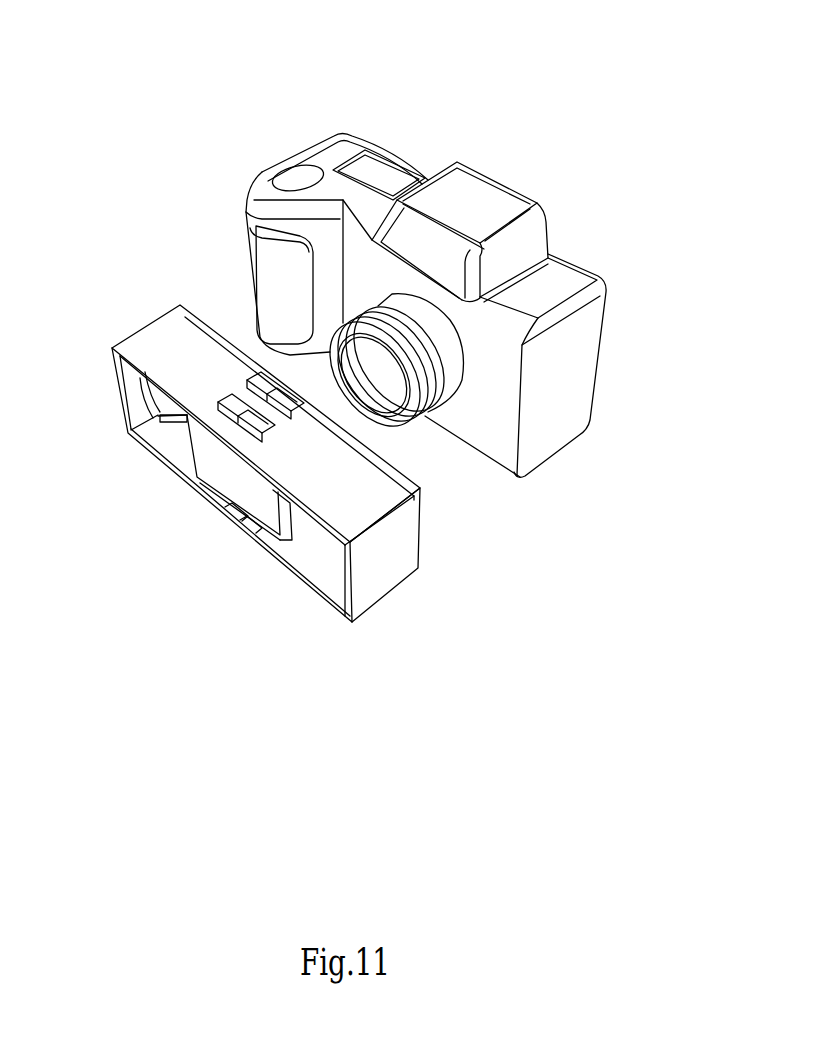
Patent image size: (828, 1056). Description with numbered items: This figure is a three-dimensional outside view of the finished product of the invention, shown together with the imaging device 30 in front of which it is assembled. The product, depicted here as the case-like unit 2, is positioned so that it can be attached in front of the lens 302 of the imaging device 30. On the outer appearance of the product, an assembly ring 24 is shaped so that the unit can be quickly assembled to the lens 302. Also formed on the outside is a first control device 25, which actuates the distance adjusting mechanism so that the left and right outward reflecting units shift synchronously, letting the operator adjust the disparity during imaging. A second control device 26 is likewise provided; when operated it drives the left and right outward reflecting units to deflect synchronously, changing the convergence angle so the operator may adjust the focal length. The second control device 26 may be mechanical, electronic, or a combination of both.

The imaging device 30 is at (333, 150).
The lens 302 is at (438, 360).
The assembly ring 24 is at (263, 378).
The first control device 25 is at (315, 398).
The second control device 26 is at (305, 420).
The case 2 is at (380, 553).